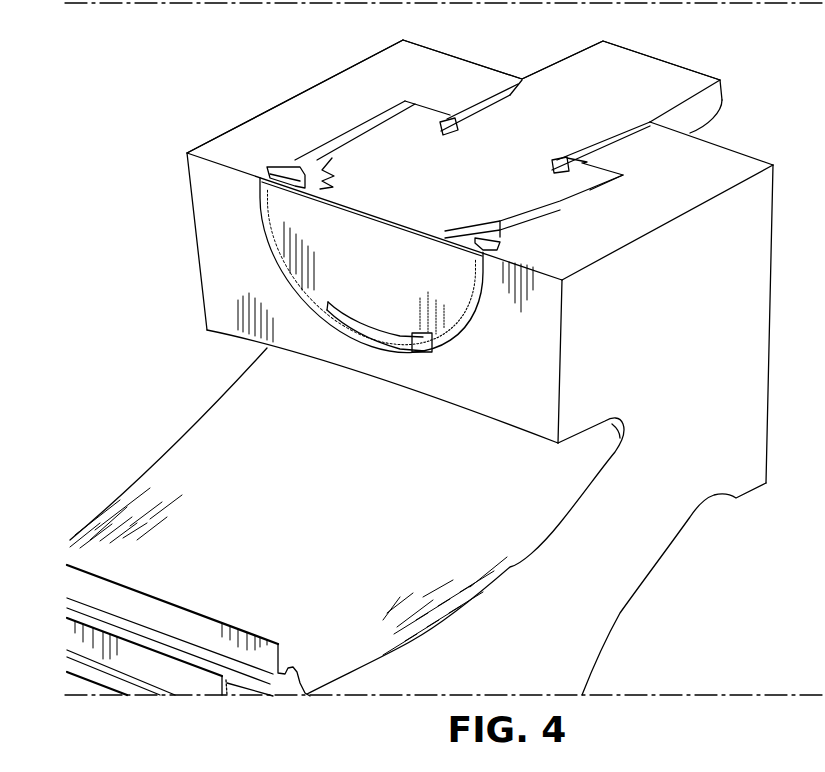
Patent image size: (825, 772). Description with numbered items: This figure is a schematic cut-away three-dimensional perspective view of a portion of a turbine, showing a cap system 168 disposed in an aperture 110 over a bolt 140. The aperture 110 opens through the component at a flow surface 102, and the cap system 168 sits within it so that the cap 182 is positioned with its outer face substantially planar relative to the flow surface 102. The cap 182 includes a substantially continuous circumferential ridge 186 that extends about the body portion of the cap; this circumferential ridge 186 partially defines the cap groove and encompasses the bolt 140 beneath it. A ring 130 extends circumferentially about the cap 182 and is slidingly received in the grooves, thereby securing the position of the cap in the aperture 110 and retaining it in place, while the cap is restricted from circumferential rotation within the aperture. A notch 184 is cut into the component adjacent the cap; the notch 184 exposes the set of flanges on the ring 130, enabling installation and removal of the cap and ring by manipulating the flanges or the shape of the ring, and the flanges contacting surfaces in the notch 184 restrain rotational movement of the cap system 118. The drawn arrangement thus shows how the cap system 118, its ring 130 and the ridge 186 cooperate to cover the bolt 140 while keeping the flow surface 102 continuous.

The flow surface 102 is at (541, 398).
The aperture 110 is at (356, 140).
The cap system 118 is at (256, 239).
The ring 130 is at (502, 244).
The bolt 140 is at (468, 179).
The cap system 168 is at (258, 148).
The cap 182 is at (400, 282).
The notch 184 is at (380, 368).
The circumferential ridge 186 is at (292, 162).